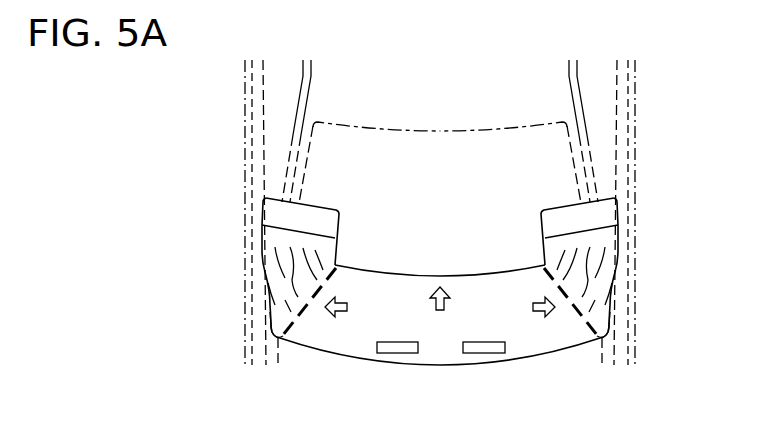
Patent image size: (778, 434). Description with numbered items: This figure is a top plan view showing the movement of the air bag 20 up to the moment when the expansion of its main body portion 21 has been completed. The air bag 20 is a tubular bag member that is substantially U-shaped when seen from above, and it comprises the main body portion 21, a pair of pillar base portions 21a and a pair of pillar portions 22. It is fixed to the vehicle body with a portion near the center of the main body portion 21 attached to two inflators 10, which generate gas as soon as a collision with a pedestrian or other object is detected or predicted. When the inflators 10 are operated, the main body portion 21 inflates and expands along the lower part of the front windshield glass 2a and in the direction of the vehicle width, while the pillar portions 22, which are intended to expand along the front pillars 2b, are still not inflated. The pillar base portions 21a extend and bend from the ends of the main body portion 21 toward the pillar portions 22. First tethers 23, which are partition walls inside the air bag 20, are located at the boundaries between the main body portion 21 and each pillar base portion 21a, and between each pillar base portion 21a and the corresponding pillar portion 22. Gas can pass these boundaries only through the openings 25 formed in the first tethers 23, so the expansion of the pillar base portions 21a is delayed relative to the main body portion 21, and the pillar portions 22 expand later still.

The front windshield glass 2a is at (458, 187).
The front pillar 2b is at (637, 138).
The inflator 10 is at (477, 353).
The air bag 20 is at (440, 297).
The main body portion 21 is at (357, 335).
The pillar base portion 21a is at (270, 254).
The pillar portion 22 is at (261, 200).
The first tether 23 is at (274, 327).
The opening 25 is at (291, 321).